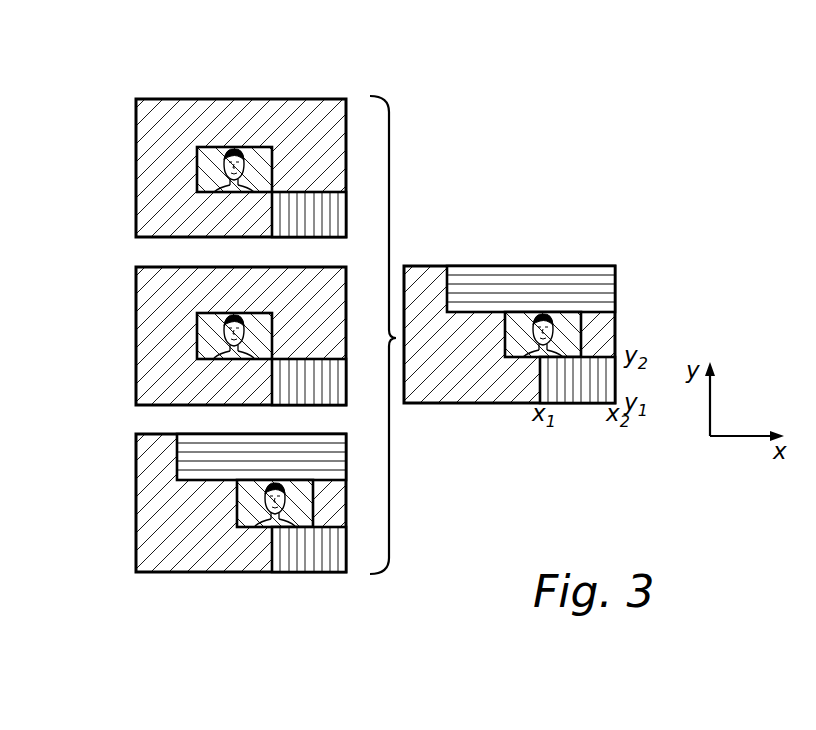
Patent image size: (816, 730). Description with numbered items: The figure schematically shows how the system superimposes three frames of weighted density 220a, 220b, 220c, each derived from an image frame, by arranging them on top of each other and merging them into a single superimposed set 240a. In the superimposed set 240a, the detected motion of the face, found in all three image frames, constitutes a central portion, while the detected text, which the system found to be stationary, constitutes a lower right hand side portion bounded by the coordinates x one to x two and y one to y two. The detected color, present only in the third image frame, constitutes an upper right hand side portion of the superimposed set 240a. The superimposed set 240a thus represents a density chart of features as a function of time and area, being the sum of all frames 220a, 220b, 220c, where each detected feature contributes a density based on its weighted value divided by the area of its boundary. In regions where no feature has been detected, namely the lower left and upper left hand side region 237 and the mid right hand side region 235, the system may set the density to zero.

The frame of weighted density 220a is at (338, 98).
The frame of weighted density 220b is at (136, 308).
The frame of weighted density 220c is at (136, 495).
The superimposed set 240a is at (545, 338).
The mid right hand side region 235 is at (600, 335).
The lower left and upper left hand side region 237 is at (488, 400).